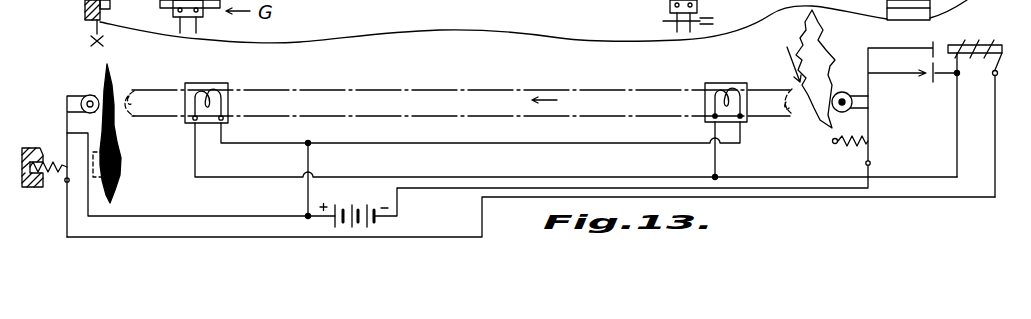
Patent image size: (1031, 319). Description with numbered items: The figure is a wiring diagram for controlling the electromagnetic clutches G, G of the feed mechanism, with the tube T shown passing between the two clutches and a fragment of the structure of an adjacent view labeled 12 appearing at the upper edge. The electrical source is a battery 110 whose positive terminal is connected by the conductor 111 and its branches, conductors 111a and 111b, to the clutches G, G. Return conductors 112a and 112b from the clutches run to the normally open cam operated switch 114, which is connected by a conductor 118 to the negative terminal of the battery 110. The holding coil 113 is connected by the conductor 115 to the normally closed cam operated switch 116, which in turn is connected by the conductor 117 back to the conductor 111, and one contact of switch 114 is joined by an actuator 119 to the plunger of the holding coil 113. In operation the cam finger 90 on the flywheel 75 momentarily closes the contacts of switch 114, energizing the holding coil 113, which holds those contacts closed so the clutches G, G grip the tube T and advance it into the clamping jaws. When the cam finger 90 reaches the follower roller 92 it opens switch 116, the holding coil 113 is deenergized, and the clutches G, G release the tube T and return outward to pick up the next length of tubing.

The generator terminal block 12 is at (668, 16).
The tube T is at (456, 87).
The electromagnetic clutch G is at (220, 81).
The flywheel 75 is at (110, 78).
The cam finger 90 is at (135, 154).
The follower roller 92 is at (96, 93).
The normally closed cam operated switch 116 is at (74, 128).
The battery 110 is at (372, 188).
The conductor 111 is at (319, 220).
The conductor 111a is at (276, 143).
The conductor 111b is at (475, 143).
The conductor 112a is at (282, 162).
The conductor 112b is at (718, 157).
The conductor 117 is at (263, 194).
The conductor 118 is at (849, 188).
The actuator 119 is at (862, 72).
The normally open cam operated switch 114 is at (905, 82).
The conductor 115 is at (994, 130).
The holding coil 113 is at (1011, 14).